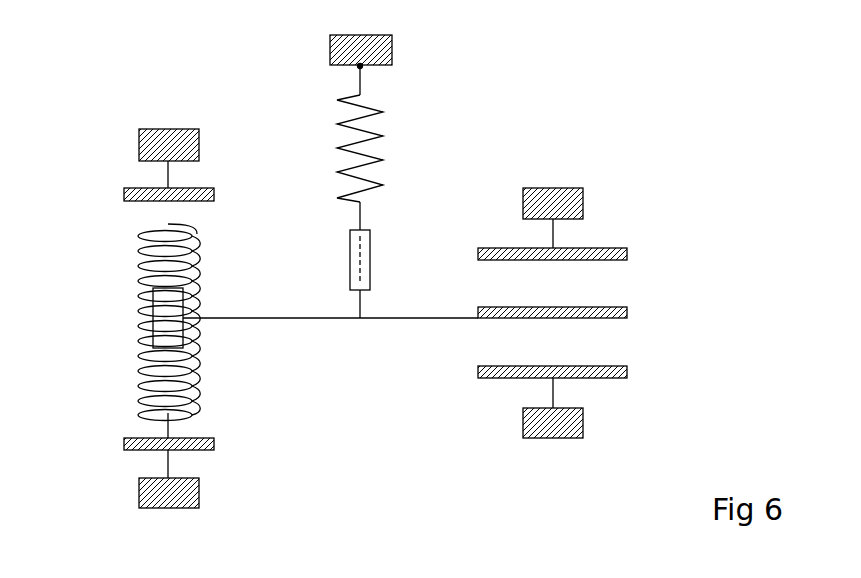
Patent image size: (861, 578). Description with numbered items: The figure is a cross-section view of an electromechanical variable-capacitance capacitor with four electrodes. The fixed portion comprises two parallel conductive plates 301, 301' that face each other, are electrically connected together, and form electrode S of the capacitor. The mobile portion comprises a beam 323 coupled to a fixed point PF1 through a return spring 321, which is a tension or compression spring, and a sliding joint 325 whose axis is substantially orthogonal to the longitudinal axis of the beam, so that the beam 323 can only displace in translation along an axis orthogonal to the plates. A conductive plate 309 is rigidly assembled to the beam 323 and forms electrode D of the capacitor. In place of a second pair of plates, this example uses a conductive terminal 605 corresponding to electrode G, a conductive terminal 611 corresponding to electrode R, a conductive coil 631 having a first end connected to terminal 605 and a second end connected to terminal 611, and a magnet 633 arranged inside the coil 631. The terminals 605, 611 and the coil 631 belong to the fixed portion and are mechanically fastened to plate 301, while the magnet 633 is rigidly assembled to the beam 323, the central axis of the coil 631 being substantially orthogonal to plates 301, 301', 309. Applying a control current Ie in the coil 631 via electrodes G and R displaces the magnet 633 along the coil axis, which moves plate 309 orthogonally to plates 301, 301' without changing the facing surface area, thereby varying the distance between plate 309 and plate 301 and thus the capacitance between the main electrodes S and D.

The conductive terminal 605 is at (203, 190).
The conductive coil 631 is at (198, 258).
The magnet 633 is at (153, 300).
The conductive terminal 611 is at (214, 443).
The return spring 321 is at (385, 136).
The sliding joint 325 is at (370, 277).
The beam 323 is at (270, 319).
The conductive plate 301 is at (577, 224).
The conductive plate 301' is at (578, 404).
The conductive plate 309 is at (502, 307).
The electrode G is at (124, 195).
The electrode R is at (124, 443).
The electrode S is at (562, 315).
The electrode D is at (620, 307).
The fixed point PF1 is at (364, 68).
The control current Ie is at (168, 201).